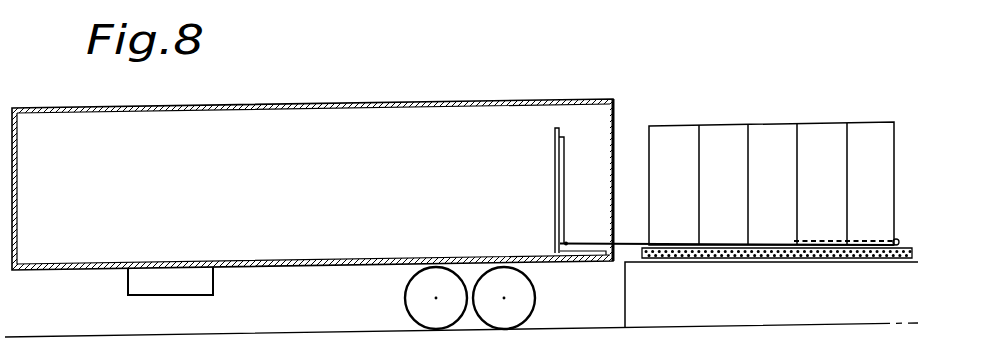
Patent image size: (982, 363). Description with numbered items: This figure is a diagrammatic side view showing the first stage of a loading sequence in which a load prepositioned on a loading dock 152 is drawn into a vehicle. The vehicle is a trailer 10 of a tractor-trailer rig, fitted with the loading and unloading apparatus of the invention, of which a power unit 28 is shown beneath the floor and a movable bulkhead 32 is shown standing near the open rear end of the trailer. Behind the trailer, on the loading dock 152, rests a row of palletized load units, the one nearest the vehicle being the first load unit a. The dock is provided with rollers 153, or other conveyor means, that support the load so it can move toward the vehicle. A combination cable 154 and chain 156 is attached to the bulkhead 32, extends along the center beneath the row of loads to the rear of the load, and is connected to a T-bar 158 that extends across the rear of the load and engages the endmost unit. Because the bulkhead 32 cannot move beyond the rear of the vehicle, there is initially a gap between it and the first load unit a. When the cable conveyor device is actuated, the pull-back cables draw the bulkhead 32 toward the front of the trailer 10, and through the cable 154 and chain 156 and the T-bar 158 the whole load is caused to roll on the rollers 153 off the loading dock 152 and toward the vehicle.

The trailer 10 is at (549, 79).
The power unit 28 is at (122, 298).
The movable bulkhead 32 is at (551, 178).
The first load unit a is at (675, 132).
The cable 154 is at (661, 244).
The chain 156 is at (806, 240).
The T-bar 158 is at (893, 239).
The rollers 153 is at (667, 258).
The loading dock 152 is at (803, 297).